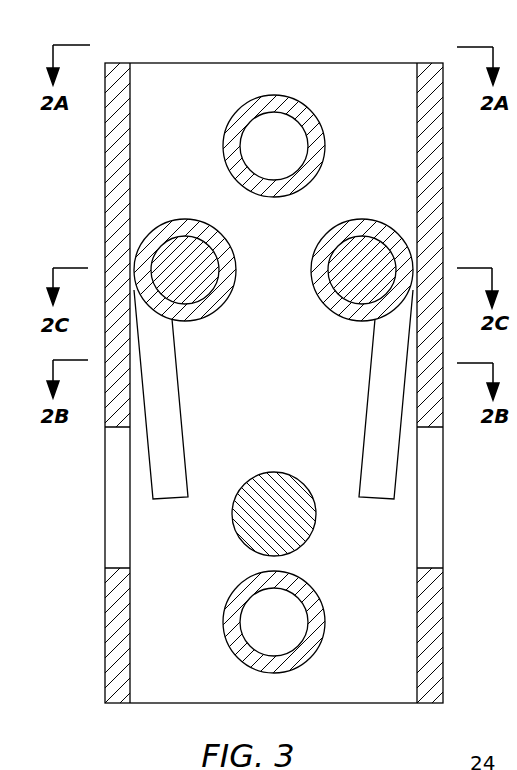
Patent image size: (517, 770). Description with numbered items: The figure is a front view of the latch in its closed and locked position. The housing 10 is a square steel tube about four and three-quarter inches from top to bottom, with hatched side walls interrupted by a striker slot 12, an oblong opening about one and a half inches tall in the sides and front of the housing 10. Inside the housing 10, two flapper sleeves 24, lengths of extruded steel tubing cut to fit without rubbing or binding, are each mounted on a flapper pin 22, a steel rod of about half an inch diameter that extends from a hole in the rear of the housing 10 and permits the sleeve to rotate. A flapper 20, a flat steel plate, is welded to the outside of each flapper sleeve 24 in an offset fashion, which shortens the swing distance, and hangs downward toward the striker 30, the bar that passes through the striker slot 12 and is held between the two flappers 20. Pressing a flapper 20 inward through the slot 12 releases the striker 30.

The housing 10 is at (160, 63).
The striker slot 12 is at (113, 543).
The flapper 20 is at (160, 455).
The flapper pin 22 is at (165, 265).
The flapper sleeve 24 is at (155, 235).
The striker 30 is at (280, 473).